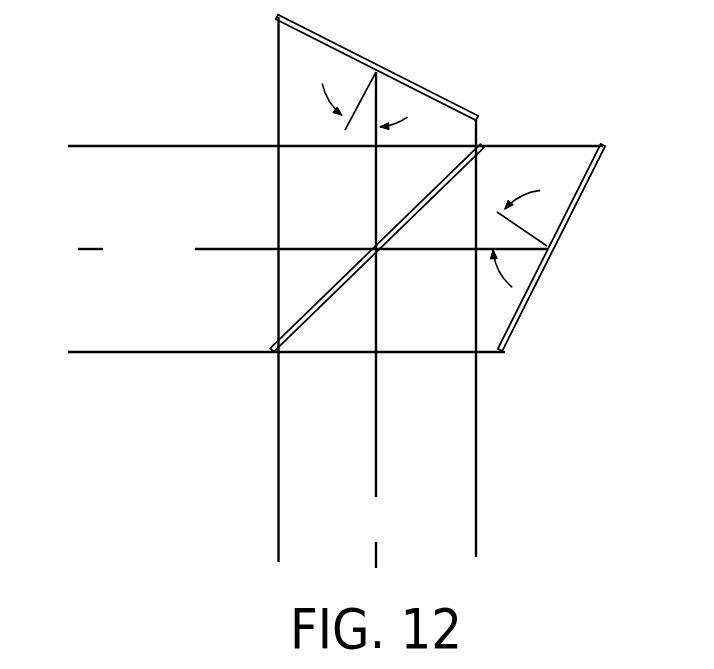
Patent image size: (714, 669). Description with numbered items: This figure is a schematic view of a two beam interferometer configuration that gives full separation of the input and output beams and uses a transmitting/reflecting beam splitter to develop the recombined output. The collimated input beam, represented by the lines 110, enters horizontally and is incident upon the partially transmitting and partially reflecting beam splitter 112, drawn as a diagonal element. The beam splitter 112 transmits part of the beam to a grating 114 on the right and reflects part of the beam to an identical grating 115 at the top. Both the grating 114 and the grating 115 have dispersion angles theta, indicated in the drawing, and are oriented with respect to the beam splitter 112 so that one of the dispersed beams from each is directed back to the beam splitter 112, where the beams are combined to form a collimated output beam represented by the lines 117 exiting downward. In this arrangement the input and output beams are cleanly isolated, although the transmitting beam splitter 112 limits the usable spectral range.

The collimated input beam 110 is at (233, 352).
The beam splitter 112 is at (334, 294).
The grating 114 is at (537, 290).
The grating 115 is at (417, 80).
The collimated output beam 117 is at (278, 448).